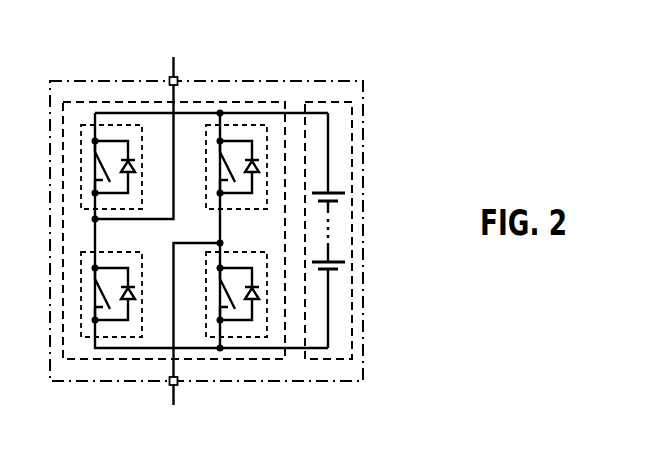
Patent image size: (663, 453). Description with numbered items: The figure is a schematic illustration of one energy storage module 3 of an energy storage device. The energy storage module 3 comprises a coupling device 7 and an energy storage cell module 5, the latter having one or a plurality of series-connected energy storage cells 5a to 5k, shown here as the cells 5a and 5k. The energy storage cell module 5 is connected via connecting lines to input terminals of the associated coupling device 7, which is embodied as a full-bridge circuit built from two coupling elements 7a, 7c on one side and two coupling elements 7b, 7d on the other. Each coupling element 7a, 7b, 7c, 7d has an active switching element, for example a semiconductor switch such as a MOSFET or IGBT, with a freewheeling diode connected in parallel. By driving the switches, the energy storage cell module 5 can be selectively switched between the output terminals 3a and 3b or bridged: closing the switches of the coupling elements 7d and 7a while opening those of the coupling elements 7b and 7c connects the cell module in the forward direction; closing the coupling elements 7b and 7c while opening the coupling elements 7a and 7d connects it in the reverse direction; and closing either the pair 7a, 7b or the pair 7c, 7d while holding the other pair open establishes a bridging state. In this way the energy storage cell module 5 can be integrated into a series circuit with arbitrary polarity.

The energy storage module 3 is at (50, 81).
The output terminal 3a is at (178, 81).
The output terminal 3b is at (169, 381).
The energy storage cell module 5 is at (332, 102).
The energy storage cell 5a is at (340, 196).
The energy storage cell 5k is at (340, 265).
The coupling device 7 is at (94, 102).
The coupling element 7a is at (134, 125).
The coupling element 7b is at (247, 125).
The coupling element 7c is at (92, 337).
The coupling element 7d is at (250, 338).